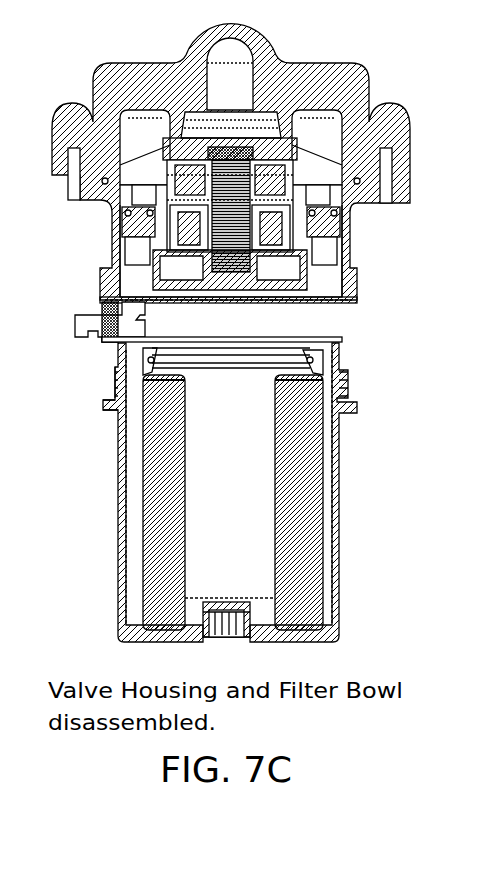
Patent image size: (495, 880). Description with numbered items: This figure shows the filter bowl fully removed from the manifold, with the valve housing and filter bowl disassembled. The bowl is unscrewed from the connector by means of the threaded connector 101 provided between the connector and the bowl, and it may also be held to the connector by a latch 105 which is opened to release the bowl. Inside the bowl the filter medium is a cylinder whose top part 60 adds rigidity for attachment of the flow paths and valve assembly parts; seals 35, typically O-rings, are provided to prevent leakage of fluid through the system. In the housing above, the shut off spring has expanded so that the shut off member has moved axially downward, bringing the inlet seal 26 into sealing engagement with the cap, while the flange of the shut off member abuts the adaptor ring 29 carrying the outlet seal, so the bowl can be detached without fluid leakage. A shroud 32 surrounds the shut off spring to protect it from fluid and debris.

The inlet seal 26 is at (350, 240).
The adaptor ring 29 is at (112, 220).
The shroud 32 is at (332, 212).
The seal 35 is at (257, 355).
The top part 60 is at (342, 370).
The threaded connector 101 is at (118, 365).
The latch 105 is at (75, 321).